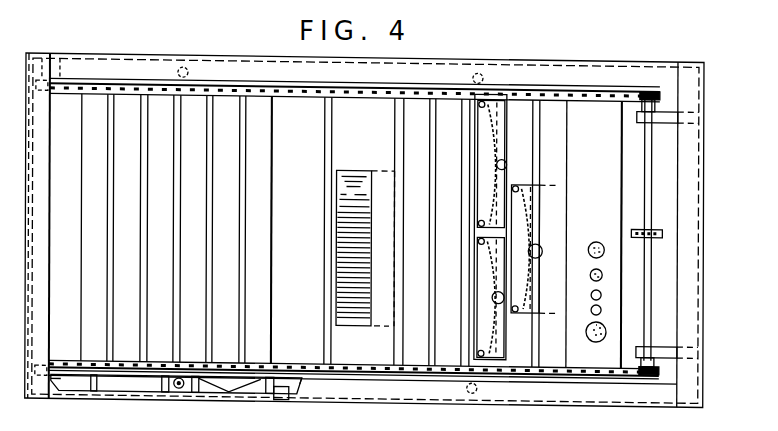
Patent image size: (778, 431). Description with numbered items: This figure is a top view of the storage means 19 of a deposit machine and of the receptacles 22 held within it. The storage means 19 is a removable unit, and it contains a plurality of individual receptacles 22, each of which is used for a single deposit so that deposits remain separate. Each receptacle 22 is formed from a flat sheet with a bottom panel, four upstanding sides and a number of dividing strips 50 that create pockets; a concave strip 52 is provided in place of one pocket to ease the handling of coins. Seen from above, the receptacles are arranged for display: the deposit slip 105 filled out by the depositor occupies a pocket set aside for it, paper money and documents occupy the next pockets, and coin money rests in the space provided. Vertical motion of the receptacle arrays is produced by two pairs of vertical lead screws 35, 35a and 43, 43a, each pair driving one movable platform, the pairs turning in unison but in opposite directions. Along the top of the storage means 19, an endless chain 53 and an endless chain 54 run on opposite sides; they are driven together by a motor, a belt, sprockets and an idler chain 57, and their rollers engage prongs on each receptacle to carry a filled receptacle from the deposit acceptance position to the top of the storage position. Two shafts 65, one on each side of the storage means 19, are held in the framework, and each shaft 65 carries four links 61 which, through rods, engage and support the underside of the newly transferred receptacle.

The storage means 19 is at (290, 396).
The receptacle 22 is at (180, 244).
The vertical lead screw 35 is at (181, 388).
The vertical lead screw 35a is at (182, 65).
The vertical lead screw 43 is at (476, 387).
The vertical lead screw 43a is at (482, 67).
The dividing strip 50 is at (540, 111).
The concave strip 52 is at (578, 135).
The endless chain 53 is at (660, 364).
The endless chain 54 is at (660, 89).
The idler chain 57 is at (665, 226).
The link 61 is at (118, 391).
The shaft 65 is at (150, 391).
The deposit slip 105 is at (357, 165).